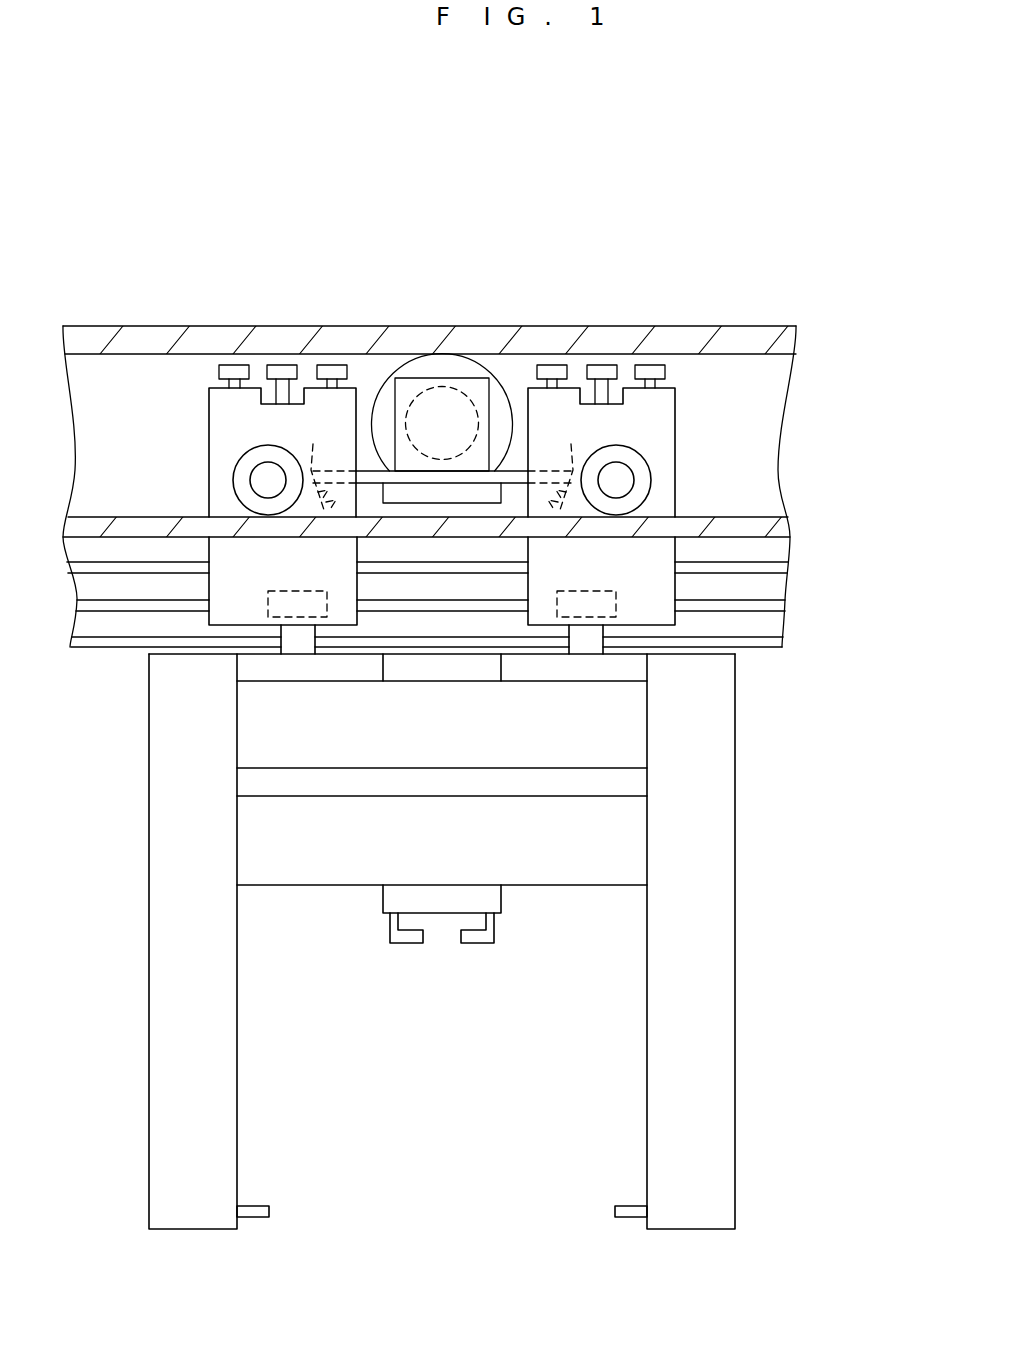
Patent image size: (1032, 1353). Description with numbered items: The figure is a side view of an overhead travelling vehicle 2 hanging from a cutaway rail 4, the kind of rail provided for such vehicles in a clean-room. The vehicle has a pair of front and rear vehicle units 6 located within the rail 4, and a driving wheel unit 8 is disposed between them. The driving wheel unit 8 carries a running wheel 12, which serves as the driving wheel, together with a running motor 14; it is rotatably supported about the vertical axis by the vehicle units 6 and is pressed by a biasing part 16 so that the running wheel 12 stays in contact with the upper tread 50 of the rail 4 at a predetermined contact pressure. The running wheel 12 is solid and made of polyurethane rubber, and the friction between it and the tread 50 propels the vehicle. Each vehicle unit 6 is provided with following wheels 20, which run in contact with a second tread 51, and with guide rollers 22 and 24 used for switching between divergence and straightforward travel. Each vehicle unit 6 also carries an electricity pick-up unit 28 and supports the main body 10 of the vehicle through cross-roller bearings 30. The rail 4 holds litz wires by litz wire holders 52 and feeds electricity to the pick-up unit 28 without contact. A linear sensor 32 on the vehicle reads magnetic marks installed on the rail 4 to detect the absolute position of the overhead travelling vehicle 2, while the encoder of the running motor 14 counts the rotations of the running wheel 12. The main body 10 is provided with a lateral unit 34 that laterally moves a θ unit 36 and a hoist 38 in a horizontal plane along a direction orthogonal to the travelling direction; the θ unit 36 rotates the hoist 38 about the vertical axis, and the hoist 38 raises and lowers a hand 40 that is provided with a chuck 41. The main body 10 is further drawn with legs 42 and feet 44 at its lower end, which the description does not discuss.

The overhead travelling vehicle 2 is at (447, 1285).
The rail 4 is at (890, 447).
The vehicle unit 6 is at (208, 437).
The driving wheel unit 8 is at (476, 392).
The main body 10 is at (743, 861).
The running wheel 12 is at (438, 364).
The running motor 14 is at (402, 398).
The biasing part 16 is at (312, 452).
The following wheel 20 is at (242, 480).
The guide roller 22 is at (238, 367).
The guide roller 24 is at (283, 367).
The electricity pick-up unit 28 is at (232, 612).
The cross-roller bearing 30 is at (290, 588).
The linear sensor 32 is at (462, 673).
The lateral unit 34 is at (625, 734).
The θ unit 36 is at (625, 784).
The hoist 38 is at (625, 844).
The hand 40 is at (490, 900).
The chuck 41 is at (475, 943).
The leg 42 is at (149, 1018).
The foot 44 is at (257, 1210).
The tread 50 is at (797, 388).
The tread 51 is at (783, 503).
The litz wire holder 52 is at (780, 566).